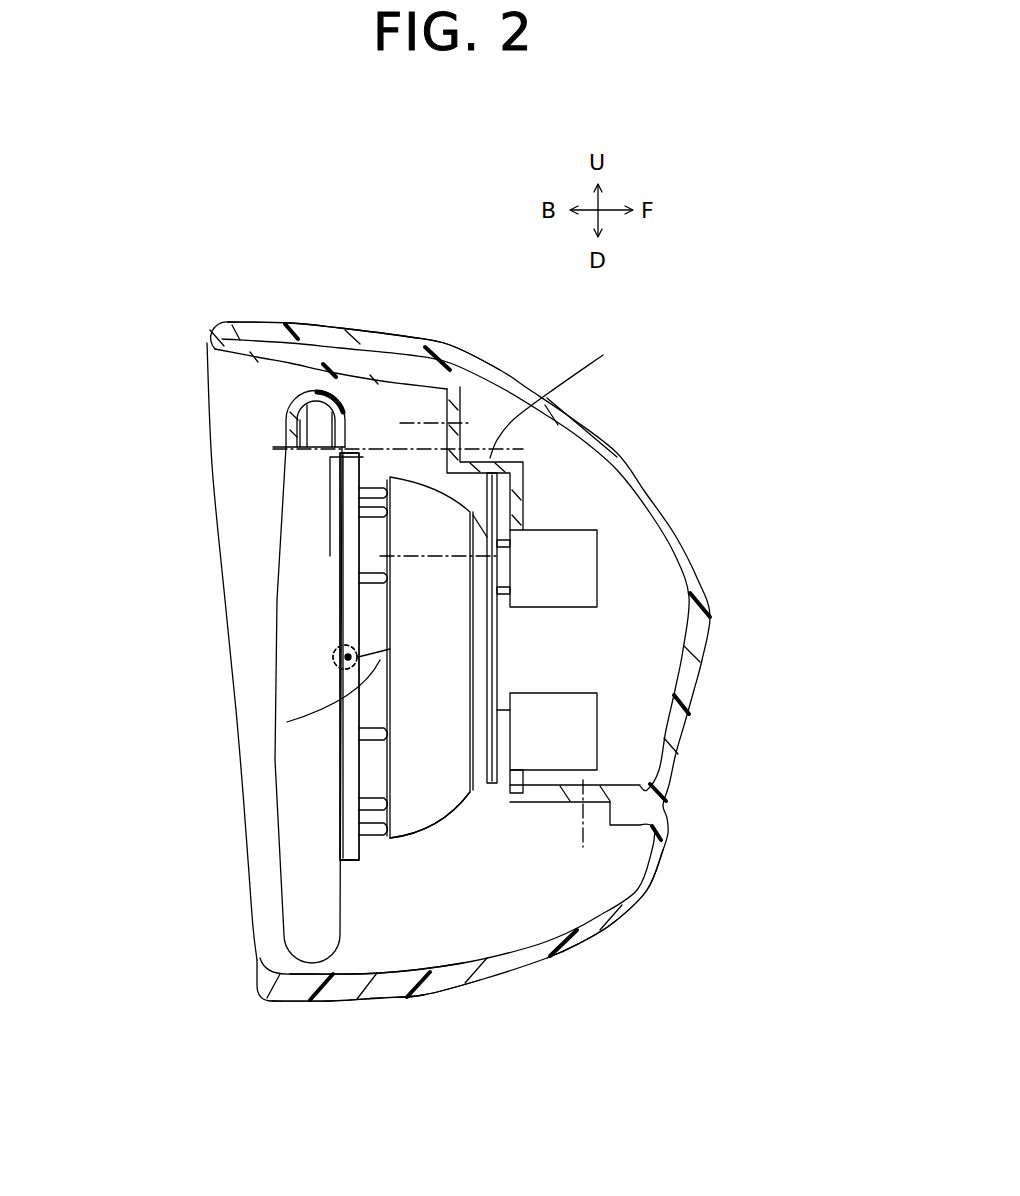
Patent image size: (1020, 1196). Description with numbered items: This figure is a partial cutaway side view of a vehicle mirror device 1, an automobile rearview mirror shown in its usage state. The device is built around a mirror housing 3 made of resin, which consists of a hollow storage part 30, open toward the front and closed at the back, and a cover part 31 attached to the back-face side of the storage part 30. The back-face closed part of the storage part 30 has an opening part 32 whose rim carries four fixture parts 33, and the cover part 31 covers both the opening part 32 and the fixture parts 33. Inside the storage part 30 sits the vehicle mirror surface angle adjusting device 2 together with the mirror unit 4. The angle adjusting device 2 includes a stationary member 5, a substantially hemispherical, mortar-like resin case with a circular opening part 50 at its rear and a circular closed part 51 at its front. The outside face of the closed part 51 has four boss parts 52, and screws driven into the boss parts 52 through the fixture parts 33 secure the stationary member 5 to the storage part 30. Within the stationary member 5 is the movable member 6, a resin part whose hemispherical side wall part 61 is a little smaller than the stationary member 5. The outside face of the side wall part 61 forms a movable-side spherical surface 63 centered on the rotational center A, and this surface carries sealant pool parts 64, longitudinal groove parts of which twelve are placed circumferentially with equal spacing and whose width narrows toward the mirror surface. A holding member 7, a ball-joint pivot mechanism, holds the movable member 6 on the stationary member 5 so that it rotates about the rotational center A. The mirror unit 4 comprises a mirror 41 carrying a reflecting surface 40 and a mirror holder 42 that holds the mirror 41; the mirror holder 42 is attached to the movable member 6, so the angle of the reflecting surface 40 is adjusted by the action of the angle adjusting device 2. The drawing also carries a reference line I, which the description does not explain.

The vehicle mirror device 1 is at (419, 244).
The vehicle mirror surface angle adjusting device 2 is at (391, 868).
The mirror housing 3 is at (629, 412).
The storage part 30 is at (315, 362).
The cover part 31 is at (623, 457).
The opening part 32 is at (525, 610).
The fixture parts 33 is at (587, 550).
The mirror unit 4 is at (276, 513).
The reflecting surface 40 is at (287, 423).
The mirror 41 is at (288, 438).
The mirror holder 42 is at (296, 393).
The stationary member 5 is at (455, 821).
The opening part 50 is at (383, 840).
The closed part 51 is at (492, 678).
The boss parts 52 is at (500, 580).
The movable member 6 is at (371, 840).
The side wall part 61 is at (367, 770).
The movable-side spherical surface 63 is at (349, 656).
The sealant pool part 64 is at (385, 512).
The holding member 7 is at (326, 660).
The rotational center A is at (342, 645).
The axis I is at (448, 592).